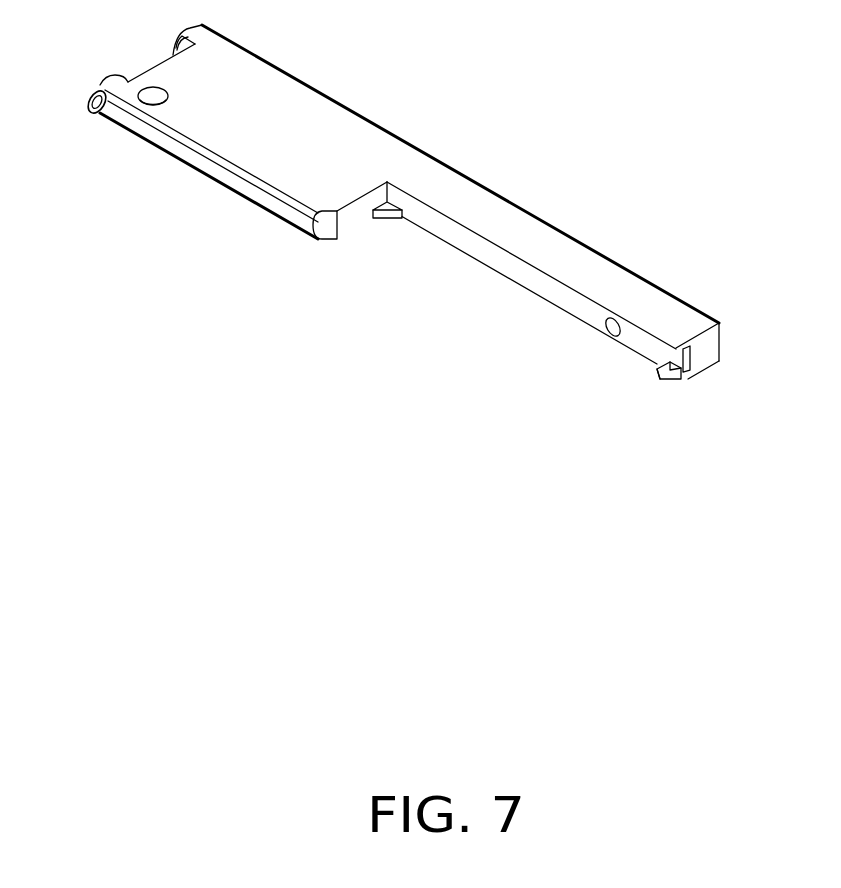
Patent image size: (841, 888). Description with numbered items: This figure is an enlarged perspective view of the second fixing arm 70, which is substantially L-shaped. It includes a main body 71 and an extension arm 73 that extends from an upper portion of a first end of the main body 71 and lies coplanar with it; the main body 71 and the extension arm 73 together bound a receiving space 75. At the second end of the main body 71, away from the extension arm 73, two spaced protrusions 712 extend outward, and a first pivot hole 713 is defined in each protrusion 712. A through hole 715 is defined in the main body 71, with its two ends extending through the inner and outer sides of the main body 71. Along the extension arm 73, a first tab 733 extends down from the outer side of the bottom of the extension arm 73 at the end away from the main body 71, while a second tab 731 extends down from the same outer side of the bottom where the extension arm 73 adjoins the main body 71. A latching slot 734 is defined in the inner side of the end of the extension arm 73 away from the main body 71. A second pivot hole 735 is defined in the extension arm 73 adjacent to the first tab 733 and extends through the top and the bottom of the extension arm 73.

The second fixing arm 70 is at (422, 125).
The main body 71 is at (262, 84).
The protrusion 712 is at (110, 82).
The first pivot hole 713 is at (97, 99).
The through hole 715 is at (147, 103).
The extension arm 73 is at (539, 236).
The second tab 731 is at (388, 210).
The first tab 733 is at (658, 381).
The latching slot 734 is at (691, 358).
The second pivot hole 735 is at (612, 329).
The receiving space 75 is at (484, 281).